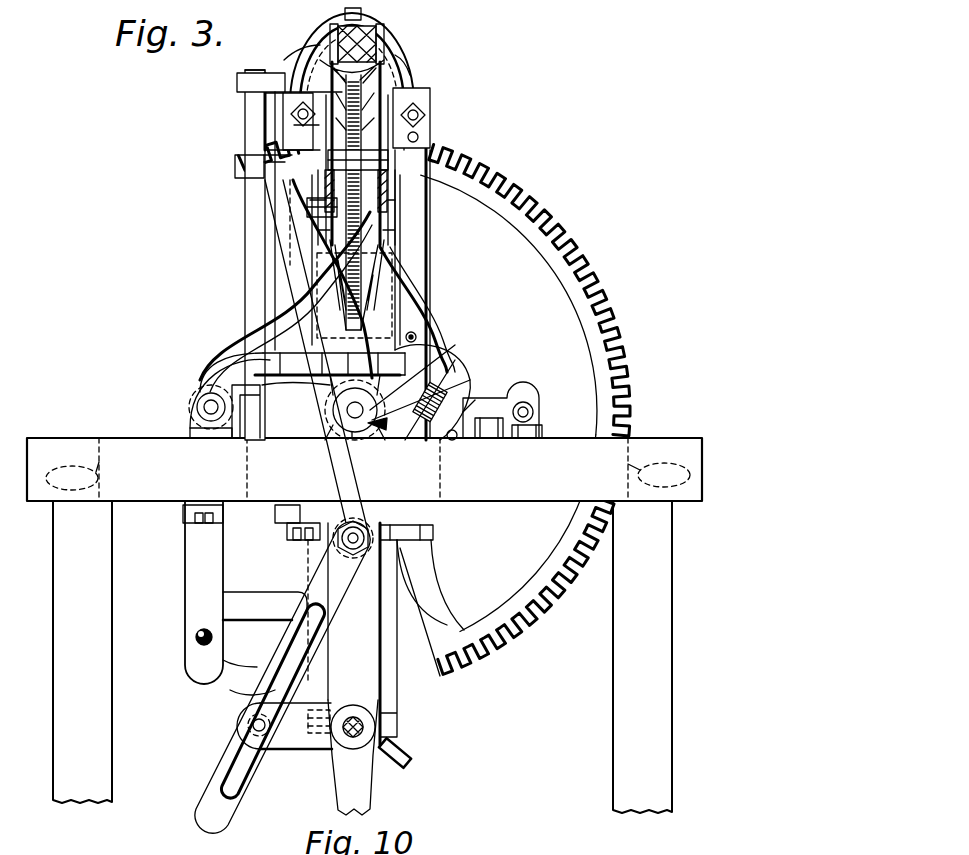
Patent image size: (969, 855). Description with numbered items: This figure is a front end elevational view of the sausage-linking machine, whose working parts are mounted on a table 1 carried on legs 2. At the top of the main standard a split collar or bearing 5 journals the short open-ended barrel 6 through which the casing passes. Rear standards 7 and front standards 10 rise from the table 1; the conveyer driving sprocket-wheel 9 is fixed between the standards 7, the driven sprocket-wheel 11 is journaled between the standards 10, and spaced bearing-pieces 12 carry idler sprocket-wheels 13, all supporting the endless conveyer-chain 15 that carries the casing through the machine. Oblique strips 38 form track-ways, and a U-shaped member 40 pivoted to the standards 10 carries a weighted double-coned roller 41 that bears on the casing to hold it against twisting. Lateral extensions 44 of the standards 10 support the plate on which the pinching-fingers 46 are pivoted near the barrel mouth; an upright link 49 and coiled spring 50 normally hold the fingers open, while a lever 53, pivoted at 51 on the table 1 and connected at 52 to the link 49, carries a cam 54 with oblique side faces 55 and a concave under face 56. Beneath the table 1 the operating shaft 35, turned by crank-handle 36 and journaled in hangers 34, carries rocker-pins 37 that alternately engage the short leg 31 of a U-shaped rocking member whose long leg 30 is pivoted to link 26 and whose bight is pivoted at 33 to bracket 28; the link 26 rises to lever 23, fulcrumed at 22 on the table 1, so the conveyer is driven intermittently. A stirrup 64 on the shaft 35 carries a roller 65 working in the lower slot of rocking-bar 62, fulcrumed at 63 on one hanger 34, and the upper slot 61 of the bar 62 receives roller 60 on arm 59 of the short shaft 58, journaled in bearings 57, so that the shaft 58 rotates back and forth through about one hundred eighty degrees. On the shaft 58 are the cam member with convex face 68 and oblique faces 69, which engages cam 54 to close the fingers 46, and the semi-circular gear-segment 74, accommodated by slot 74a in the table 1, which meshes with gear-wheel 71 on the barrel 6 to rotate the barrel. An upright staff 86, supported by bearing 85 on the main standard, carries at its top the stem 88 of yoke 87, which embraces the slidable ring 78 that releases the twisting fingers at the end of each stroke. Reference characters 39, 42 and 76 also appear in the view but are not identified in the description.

The table 1 is at (364, 469).
The legs 2 is at (362, 657).
The split collar or bearing 5 is at (445, 76).
The barrel 6 is at (453, 55).
The rear standards 7 is at (368, 330).
The conveyer driving sprocket-wheel 9 is at (420, 138).
The front standards 10 is at (247, 340).
The driven sprocket-wheel 11 is at (352, 95).
The bearing-pieces 12 is at (320, 255).
The idler sprocket-wheels 13 is at (318, 240).
The endless conveyer-belt 15 is at (354, 306).
The fulcrum 22 is at (542, 430).
The lever 23 is at (500, 398).
The second link 26 is at (433, 540).
The bracket 28 is at (203, 592).
The long leg 30 is at (265, 629).
The short leg 31 is at (235, 690).
The pivot 33 is at (170, 675).
The bearings or hangers 34 is at (328, 640).
The operating shaft 35 is at (352, 712).
The crank-handle 36 is at (362, 669).
The rocker-pins 37 is at (325, 713).
The elongated strips 38 is at (410, 85).
The tapered shaft end 39 is at (356, 288).
The U-shaped member 40 is at (307, 205).
The double-coned roller 41 is at (372, 32).
The bearing 42 is at (318, 215).
The lateral extensions 44 is at (283, 130).
The pinching-fingers 46 is at (320, 35).
The upright link 49 is at (412, 280).
The coiled spring 50 is at (475, 420).
The pivot 51 is at (205, 400).
The pivot connection 52 is at (440, 330).
The lever 53 is at (289, 364).
The cam 54 is at (358, 364).
The oblique side faces 55 is at (388, 364).
The concave under face 56 is at (333, 364).
The bearings 57 is at (350, 432).
The short shaft 58 is at (347, 412).
The lateral arm 59 is at (353, 440).
The roller 60 is at (445, 390).
The slot 61 is at (430, 372).
The rocking-bar 62 is at (470, 340).
The fulcrum 63 is at (353, 553).
The stirrup 64 is at (284, 726).
The roller 65 is at (252, 727).
The convex arc-shaped face 68 is at (380, 430).
The oblique side faces 69 is at (390, 438).
The gear-wheel 71 is at (310, 45).
The gear-segment 74 is at (608, 303).
The slot 74a is at (368, 476).
The arm 76 is at (400, 55).
The ring 78 is at (405, 68).
The bearing 85 is at (240, 172).
The staff 86 is at (245, 220).
The yoke 87 is at (286, 44).
The stem 88 is at (240, 86).